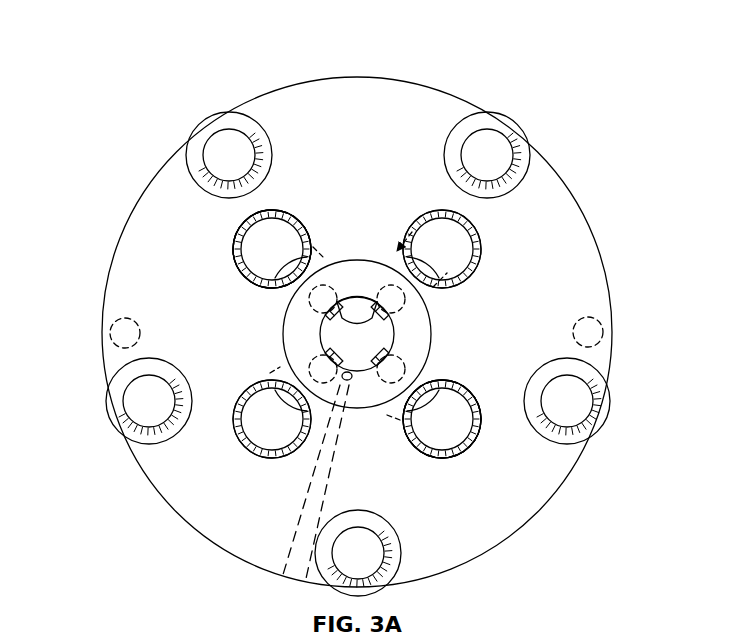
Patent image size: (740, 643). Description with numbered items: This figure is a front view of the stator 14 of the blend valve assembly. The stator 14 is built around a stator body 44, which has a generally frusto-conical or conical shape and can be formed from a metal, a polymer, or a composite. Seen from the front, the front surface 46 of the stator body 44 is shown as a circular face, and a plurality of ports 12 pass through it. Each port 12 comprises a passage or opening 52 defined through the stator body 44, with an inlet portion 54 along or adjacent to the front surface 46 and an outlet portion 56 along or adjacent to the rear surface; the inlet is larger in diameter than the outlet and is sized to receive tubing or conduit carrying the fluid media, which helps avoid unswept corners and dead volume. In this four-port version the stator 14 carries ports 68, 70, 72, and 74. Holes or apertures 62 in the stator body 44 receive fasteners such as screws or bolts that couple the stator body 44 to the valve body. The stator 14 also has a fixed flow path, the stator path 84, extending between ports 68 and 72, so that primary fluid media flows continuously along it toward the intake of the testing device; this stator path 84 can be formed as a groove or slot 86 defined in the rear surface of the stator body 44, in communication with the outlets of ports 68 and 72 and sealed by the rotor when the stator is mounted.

The stator 14 is at (360, 71).
The front surface 46 is at (413, 106).
The stator body 44 is at (203, 126).
The port 12 is at (291, 212).
The port 72 is at (273, 211).
The port 68 is at (420, 218).
The stator path 84 is at (359, 301).
The outlet portion 56 is at (336, 297).
The inlet portion 54 is at (239, 275).
The passage or opening 52 is at (274, 287).
The holes or apertures 62 is at (112, 340).
The port 70 is at (243, 447).
The groove or slot 86 is at (357, 322).
The port 74 is at (423, 450).